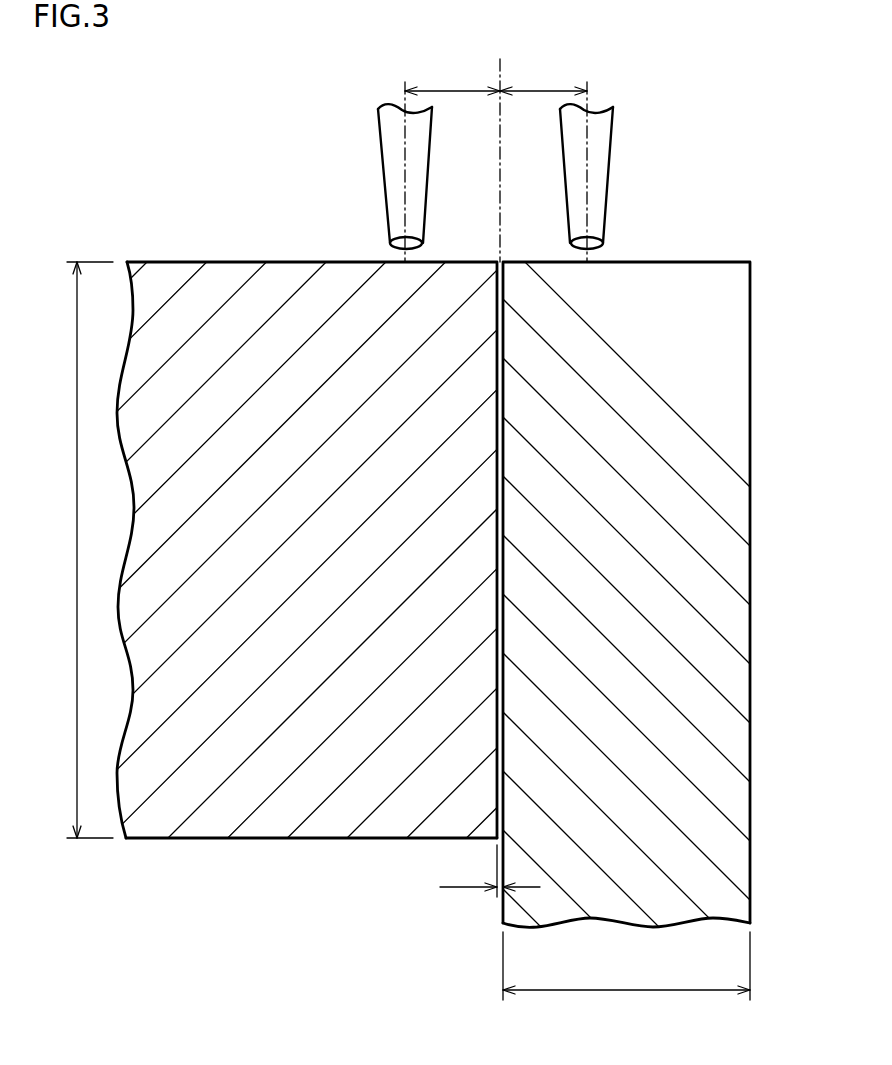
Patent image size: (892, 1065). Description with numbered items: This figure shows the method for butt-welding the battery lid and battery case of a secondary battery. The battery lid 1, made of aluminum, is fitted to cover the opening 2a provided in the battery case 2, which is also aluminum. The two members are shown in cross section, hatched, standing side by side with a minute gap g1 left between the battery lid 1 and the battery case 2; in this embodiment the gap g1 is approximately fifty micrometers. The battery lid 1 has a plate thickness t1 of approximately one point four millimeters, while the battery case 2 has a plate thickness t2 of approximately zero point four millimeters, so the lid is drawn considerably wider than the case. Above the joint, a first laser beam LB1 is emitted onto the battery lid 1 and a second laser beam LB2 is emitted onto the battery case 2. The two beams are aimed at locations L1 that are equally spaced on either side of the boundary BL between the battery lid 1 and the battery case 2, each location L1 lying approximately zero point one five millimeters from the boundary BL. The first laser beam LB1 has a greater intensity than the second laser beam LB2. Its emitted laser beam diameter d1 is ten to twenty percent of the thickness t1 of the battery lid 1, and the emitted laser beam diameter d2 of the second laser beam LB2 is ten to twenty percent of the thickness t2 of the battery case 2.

The battery lid 1 is at (315, 800).
The battery case 2 is at (713, 553).
The opening 2a is at (227, 860).
The boundary BL is at (500, 73).
The first laser beam LB1 is at (397, 162).
The second laser beam LB2 is at (596, 163).
The emitted laser beam diameter of first laser beam d1 is at (386, 250).
The emitted laser beam diameter of second laser beam d2 is at (603, 250).
The location L1 is at (496, 77).
The plate thickness t1 is at (80, 550).
The plate thickness t2 is at (626, 966).
The gap g1 is at (490, 871).